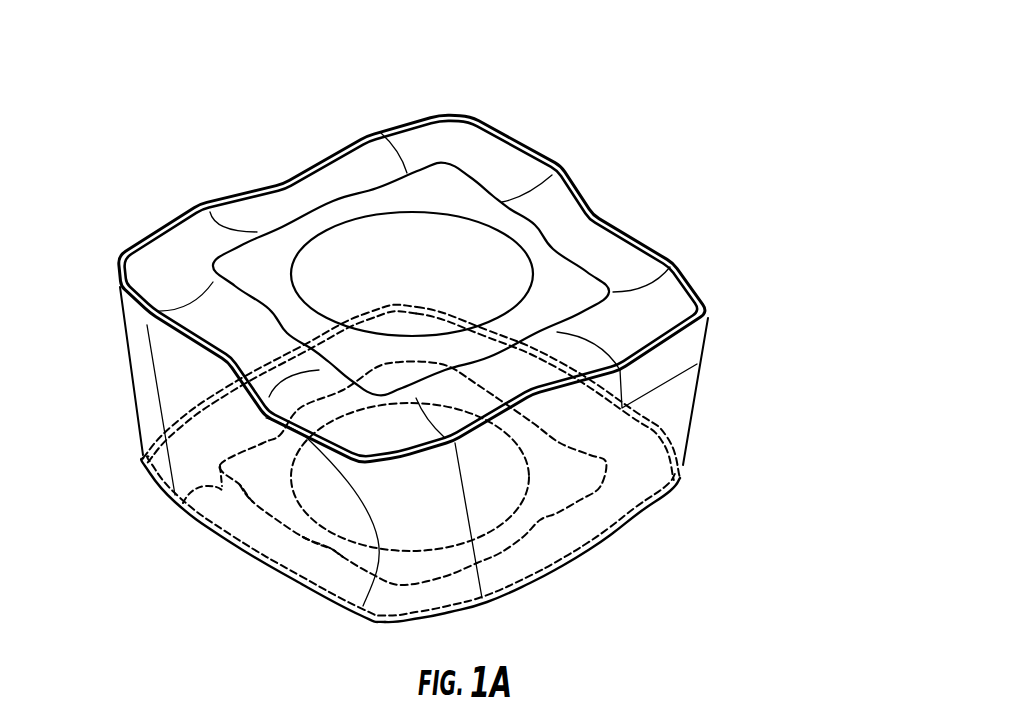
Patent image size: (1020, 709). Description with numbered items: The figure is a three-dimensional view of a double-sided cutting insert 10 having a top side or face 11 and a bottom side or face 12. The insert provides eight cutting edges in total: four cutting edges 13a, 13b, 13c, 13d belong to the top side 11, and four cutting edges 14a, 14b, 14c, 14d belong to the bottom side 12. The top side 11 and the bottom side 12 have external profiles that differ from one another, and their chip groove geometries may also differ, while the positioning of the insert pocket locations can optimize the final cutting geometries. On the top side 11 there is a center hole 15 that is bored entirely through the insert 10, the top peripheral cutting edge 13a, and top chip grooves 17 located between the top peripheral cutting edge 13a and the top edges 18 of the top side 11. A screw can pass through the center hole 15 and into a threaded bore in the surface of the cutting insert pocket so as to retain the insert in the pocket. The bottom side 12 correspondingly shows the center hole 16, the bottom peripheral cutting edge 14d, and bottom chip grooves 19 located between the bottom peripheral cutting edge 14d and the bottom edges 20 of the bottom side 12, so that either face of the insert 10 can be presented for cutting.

The double-sided cutting insert 10 is at (638, 155).
The top side or face 11 is at (439, 195).
The bottom side or face 12 is at (562, 468).
The top peripheral cutting edge 13a is at (311, 163).
The cutting edge 13b is at (630, 233).
The cutting edge 13c is at (587, 388).
The cutting edge 13d is at (210, 360).
The cutting edge 14a is at (273, 357).
The cutting edge 14b is at (553, 361).
The cutting edge 14c is at (562, 562).
The bottom peripheral cutting edge 14d is at (297, 580).
The center hole 15 is at (373, 270).
The center hole 16 is at (500, 477).
The top chip grooves 17 is at (307, 197).
The top edges 18 is at (432, 163).
The bottom chip grooves 19 is at (209, 503).
The bottom edges 20 is at (336, 556).